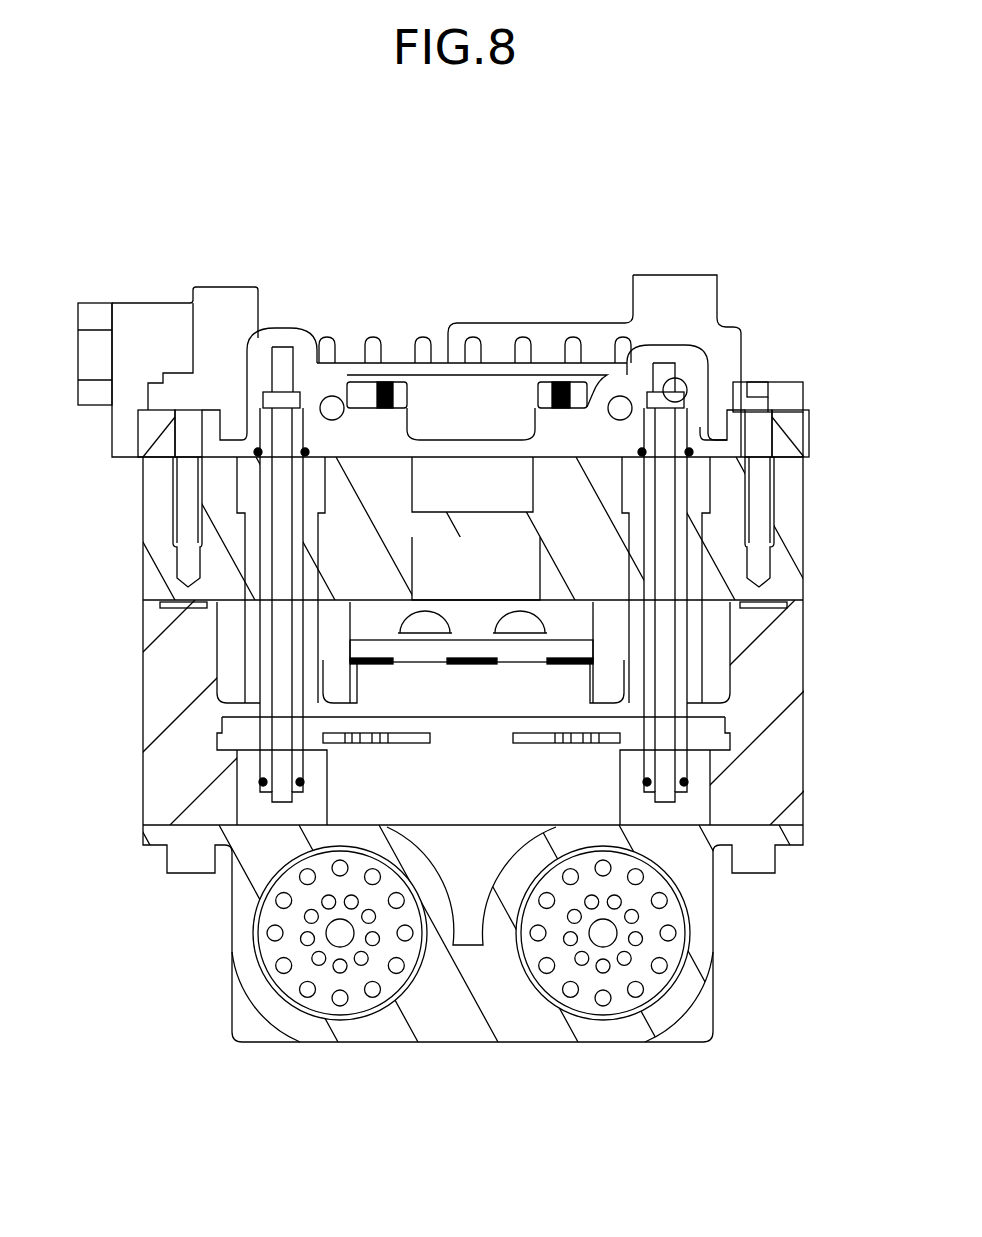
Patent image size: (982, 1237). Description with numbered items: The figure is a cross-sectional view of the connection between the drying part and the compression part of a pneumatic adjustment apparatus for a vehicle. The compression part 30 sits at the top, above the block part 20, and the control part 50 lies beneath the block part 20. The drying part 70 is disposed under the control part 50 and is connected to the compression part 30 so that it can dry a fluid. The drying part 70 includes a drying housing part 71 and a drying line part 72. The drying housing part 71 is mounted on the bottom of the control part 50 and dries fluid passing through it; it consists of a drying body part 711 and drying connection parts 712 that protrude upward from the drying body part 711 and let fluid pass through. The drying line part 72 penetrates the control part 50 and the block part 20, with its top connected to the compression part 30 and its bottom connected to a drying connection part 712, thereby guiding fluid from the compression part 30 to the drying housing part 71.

The block part 20 is at (803, 503).
The compression part 30 is at (672, 275).
The control part 50 is at (803, 660).
The drying part 70 is at (473, 717).
The drying housing part 71 is at (473, 896).
The drying body part 711 is at (232, 900).
The drying connection part 712 is at (233, 783).
The drying line part 72 is at (680, 690).